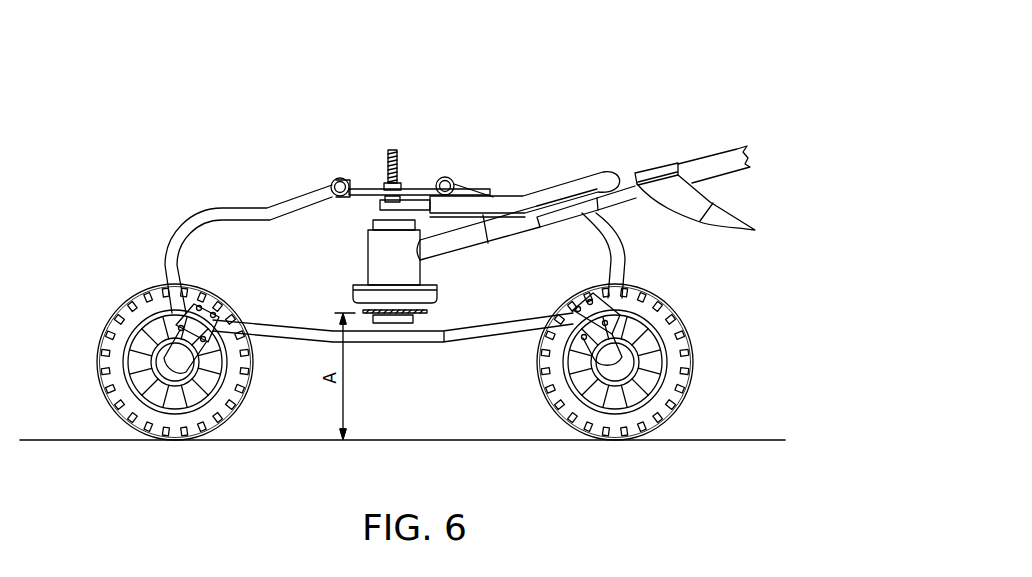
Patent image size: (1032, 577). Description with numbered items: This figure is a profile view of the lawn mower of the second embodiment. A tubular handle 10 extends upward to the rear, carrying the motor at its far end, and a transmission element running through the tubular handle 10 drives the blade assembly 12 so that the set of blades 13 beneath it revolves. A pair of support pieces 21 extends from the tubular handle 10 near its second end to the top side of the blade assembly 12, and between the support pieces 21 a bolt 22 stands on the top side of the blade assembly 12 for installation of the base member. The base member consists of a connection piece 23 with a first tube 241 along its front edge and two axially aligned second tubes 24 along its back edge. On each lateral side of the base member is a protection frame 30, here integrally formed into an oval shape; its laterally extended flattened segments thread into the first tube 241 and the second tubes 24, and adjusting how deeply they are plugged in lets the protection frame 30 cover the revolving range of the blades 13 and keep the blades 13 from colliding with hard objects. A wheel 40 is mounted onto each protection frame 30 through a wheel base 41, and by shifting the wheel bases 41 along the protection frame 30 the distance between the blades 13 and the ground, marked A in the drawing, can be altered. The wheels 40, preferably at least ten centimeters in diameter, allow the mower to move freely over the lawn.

The tubular handle 10 is at (700, 166).
The blade assembly 12 is at (378, 273).
The blades 13 is at (418, 315).
The support pieces 21 is at (511, 196).
The bolt 22 is at (388, 160).
The connection piece 23 is at (415, 189).
The second tubes 24 is at (449, 178).
The first tube 241 is at (333, 181).
The protection frame 30 is at (218, 212).
The wheel 40 is at (123, 303).
The wheel base 41 is at (203, 318).